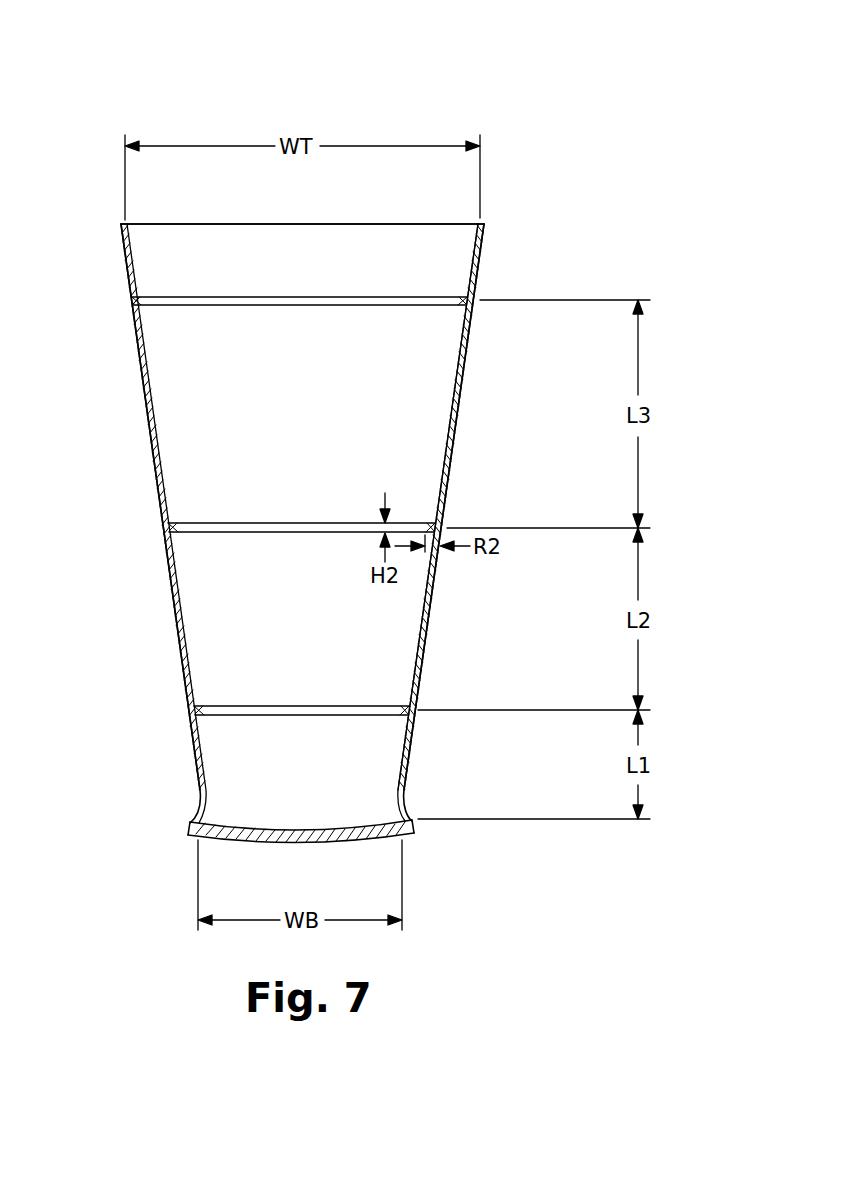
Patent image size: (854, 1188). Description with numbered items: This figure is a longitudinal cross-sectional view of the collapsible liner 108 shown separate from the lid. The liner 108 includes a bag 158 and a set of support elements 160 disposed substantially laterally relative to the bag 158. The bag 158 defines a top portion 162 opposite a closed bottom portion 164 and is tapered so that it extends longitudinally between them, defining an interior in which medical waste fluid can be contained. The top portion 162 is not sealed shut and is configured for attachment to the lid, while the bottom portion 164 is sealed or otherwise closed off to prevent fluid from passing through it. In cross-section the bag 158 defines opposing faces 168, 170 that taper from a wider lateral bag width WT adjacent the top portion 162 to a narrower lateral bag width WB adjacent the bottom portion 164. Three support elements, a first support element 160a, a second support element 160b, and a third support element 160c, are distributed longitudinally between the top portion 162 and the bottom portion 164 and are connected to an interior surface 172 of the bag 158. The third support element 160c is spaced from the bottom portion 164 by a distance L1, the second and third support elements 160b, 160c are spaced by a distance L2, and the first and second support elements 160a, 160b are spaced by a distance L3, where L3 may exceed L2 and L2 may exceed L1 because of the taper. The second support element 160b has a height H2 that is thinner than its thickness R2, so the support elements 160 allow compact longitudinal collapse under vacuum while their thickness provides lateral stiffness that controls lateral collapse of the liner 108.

The collapsible liner 108 is at (299, 469).
The bag 158 is at (121, 232).
The support elements 160 is at (280, 487).
The first support element 160a is at (462, 299).
The second support element 160b is at (431, 523).
The third support element 160c is at (301, 681).
The top portion 162 is at (331, 222).
The bottom portion 164 is at (337, 843).
The opposing face 168 is at (140, 356).
The opposing face 170 is at (468, 357).
The interior surface 172 is at (466, 352).